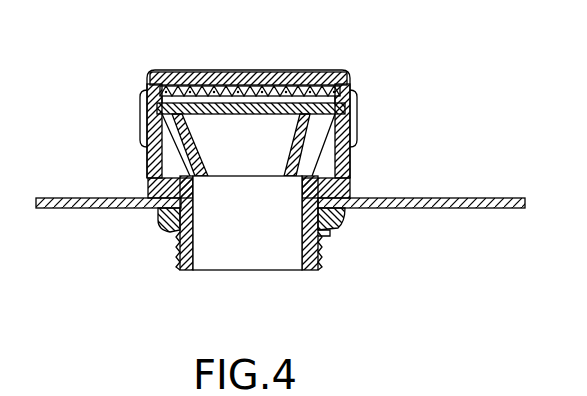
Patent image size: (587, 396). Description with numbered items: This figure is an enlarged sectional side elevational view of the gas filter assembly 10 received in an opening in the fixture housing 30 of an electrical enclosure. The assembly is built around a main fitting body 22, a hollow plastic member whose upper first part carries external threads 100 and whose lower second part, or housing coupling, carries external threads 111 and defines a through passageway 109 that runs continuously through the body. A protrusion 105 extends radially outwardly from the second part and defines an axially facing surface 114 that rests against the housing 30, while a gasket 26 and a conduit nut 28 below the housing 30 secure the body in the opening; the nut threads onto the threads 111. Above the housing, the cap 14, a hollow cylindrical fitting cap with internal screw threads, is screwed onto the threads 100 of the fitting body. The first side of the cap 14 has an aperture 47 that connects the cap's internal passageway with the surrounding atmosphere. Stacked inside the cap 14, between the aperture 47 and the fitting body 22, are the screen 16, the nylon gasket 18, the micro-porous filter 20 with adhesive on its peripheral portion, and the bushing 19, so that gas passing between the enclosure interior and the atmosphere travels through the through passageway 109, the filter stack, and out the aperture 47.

The gas filter assembly 10 is at (103, 74).
The cap 14 is at (349, 69).
The screen 16 is at (355, 88).
The aperture 47 is at (190, 72).
The nylon gasket 18 is at (356, 101).
The micro-porous filter 20 is at (356, 118).
The bushing 19 is at (356, 139).
The main fitting body 22 is at (350, 163).
The protrusion 105 is at (348, 191).
The fixture housing 30 is at (512, 194).
The threads 100 is at (158, 165).
The through passageway 109 is at (205, 268).
The threads 111 is at (182, 272).
The axially facing surface 114 is at (165, 216).
The gasket 26 is at (345, 212).
The conduit nut 28 is at (330, 226).